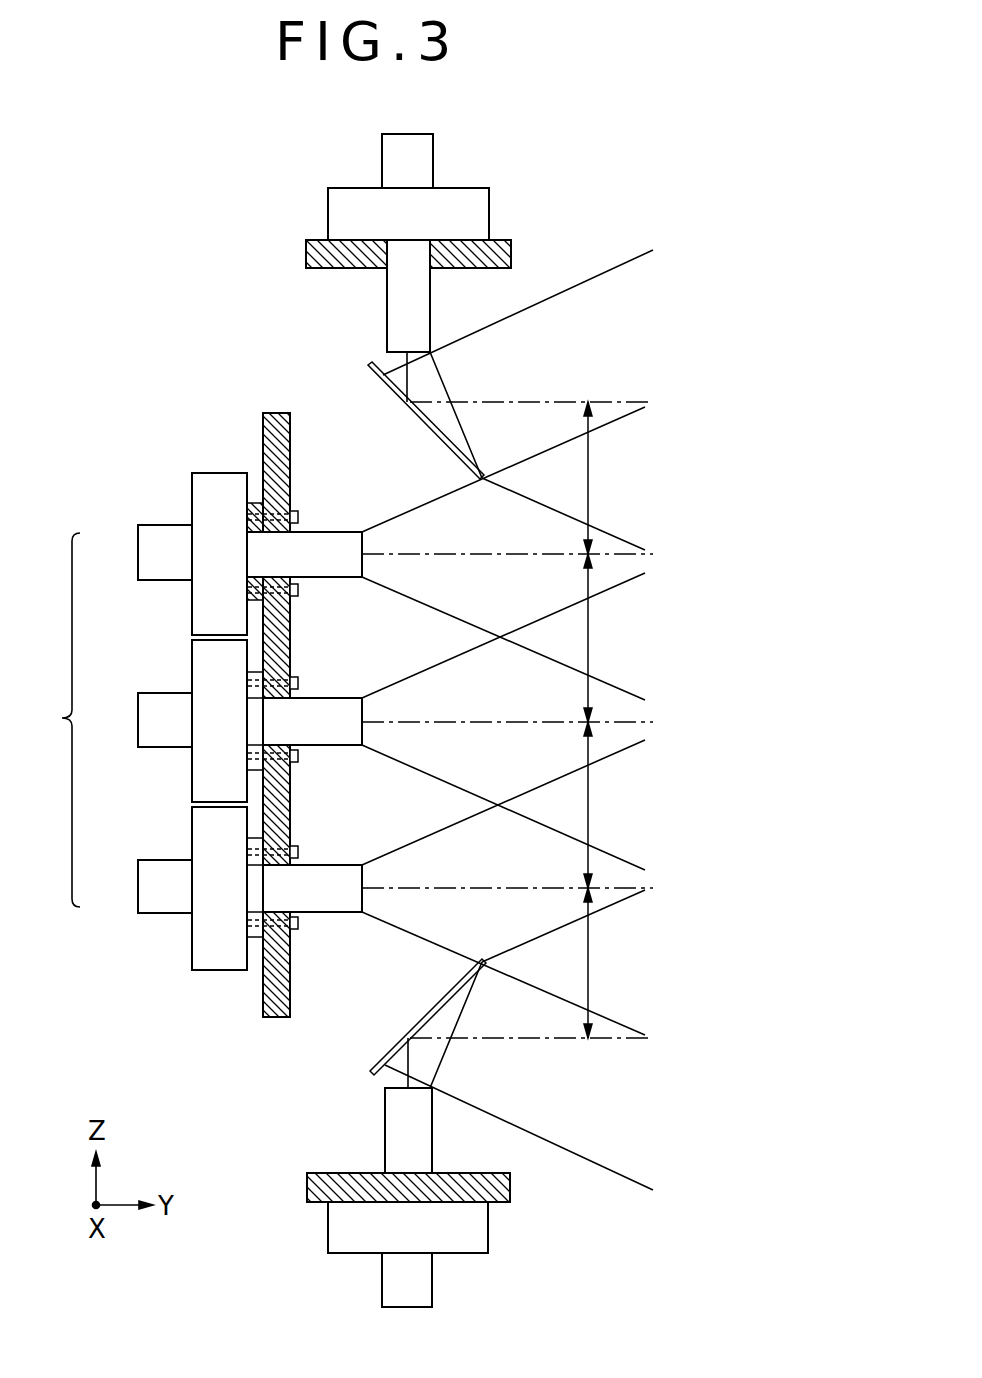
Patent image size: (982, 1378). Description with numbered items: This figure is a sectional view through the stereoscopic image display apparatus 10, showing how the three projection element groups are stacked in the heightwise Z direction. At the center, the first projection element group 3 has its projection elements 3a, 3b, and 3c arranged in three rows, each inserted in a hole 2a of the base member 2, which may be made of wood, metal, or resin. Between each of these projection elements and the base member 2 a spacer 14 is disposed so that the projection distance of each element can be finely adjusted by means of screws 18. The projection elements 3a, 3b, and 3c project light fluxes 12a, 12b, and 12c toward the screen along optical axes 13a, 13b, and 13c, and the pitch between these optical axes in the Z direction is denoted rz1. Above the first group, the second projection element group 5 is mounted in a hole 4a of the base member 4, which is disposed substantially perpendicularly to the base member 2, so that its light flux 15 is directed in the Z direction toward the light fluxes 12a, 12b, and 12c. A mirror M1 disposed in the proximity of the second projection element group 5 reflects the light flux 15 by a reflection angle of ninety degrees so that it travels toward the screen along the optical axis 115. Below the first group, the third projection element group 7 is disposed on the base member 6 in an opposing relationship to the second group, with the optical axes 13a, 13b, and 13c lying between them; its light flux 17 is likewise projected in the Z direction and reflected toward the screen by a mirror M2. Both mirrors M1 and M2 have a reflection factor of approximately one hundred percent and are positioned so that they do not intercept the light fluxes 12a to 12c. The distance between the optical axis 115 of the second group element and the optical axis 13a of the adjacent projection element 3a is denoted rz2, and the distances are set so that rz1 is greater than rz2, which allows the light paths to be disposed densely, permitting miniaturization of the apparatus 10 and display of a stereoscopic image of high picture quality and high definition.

The stereoscopic image display apparatus 10 is at (274, 186).
The second projection element group 5 is at (433, 151).
The base member 4 is at (320, 262).
The hole 4a is at (396, 258).
The light flux 15 is at (388, 372).
The optical axis 115 is at (541, 400).
The base member 2 is at (272, 411).
The mirror M1 is at (422, 429).
The spacer 14 is at (258, 504).
The screw 18 is at (298, 517).
The hole 2a is at (284, 543).
The first projection element group 3 is at (143, 721).
The projection element 3a is at (140, 556).
The projection element 3b is at (140, 723).
The projection element 3c is at (140, 891).
The light flux 12a is at (432, 598).
The light flux 12b is at (432, 768).
The light flux 12c is at (432, 934).
The optical axis 13a is at (490, 558).
The optical axis 13b is at (490, 726).
The optical axis 13c is at (490, 892).
The pitch rz1 is at (609, 721).
The distance rz2 is at (609, 720).
The mirror M2 is at (418, 1020).
The light flux 17 is at (388, 1072).
The base member 6 is at (318, 1195).
The third projection element group 7 is at (433, 1280).